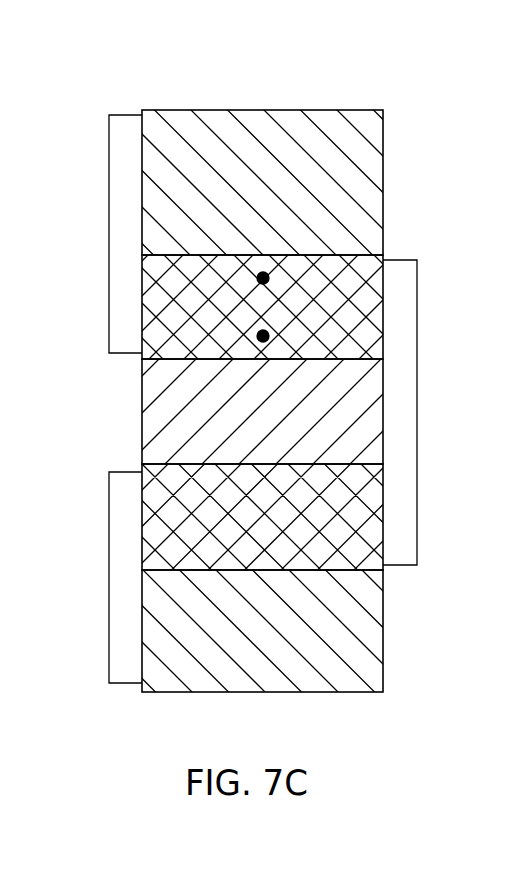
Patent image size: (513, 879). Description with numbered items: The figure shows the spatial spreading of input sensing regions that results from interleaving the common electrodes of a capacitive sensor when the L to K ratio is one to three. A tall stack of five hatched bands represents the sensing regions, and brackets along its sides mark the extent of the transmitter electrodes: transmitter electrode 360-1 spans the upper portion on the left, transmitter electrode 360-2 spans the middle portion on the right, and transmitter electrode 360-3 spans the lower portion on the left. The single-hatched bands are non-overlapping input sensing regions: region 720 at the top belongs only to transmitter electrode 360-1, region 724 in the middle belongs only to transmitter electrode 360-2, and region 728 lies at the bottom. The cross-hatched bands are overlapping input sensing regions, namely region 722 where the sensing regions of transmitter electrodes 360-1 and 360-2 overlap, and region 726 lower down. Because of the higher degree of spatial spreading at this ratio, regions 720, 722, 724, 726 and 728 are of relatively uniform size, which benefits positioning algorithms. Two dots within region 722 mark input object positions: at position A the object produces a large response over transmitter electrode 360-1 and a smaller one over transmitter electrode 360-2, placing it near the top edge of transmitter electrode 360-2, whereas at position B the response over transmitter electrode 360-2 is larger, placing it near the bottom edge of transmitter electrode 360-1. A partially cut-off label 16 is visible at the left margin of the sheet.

The non-overlapping input sensing region 720 is at (323, 120).
The overlapping input sensing region 722 is at (368, 276).
The non-overlapping input sensing region 724 is at (170, 440).
The overlapping input sensing region 726 is at (352, 550).
The non-overlapping input sensing region 728 is at (340, 673).
The transmitter electrode 360-1 is at (109, 193).
The transmitter electrode 360-2 is at (417, 380).
The transmitter electrode 360-3 is at (109, 586).
The partial reference (cut off) 16 is at (11, 552).
The position A is at (263, 278).
The position B is at (263, 336).